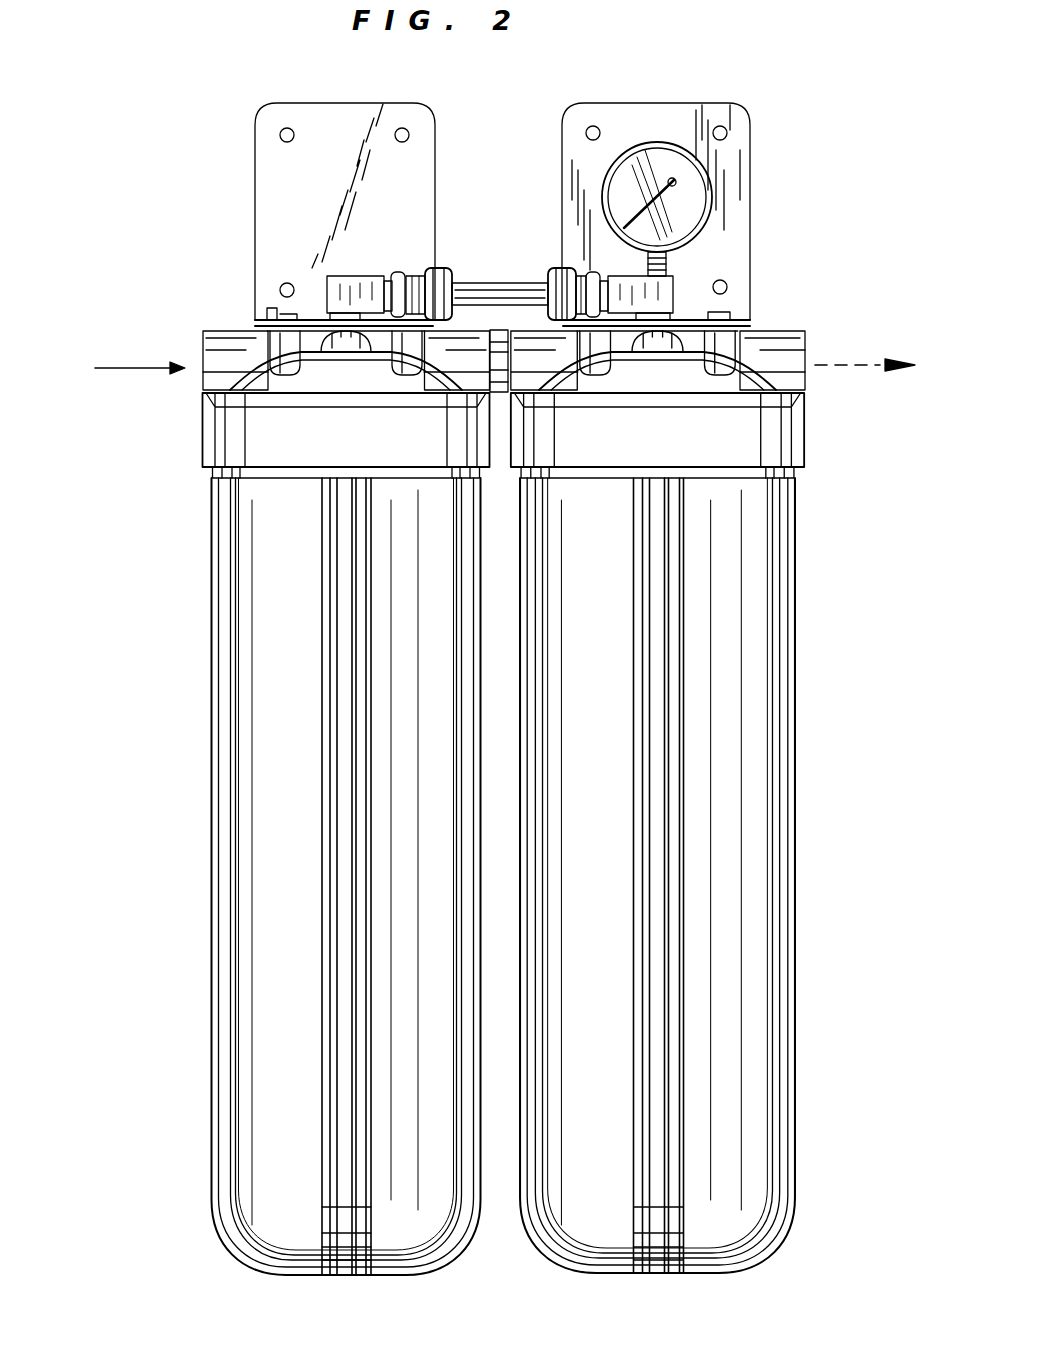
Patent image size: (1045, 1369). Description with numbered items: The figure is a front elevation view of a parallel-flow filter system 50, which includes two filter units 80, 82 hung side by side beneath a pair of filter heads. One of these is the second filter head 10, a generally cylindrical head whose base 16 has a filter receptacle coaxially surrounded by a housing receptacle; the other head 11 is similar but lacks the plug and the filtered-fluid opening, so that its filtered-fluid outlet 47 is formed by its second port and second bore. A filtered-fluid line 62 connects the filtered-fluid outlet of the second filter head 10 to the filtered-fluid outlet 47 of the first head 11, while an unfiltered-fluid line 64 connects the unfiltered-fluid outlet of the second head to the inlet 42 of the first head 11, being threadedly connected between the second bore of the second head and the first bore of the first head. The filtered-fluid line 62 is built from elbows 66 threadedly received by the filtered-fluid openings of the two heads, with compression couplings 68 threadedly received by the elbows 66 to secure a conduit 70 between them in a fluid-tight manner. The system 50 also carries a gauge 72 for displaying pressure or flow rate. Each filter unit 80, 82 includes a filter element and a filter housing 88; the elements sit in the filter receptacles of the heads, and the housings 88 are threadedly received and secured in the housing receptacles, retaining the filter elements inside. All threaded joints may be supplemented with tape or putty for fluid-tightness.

The filter system 50 is at (760, 72).
The second filter head 10 is at (219, 331).
The second filter housing head 11 is at (768, 326).
The inlet 42 is at (202, 377).
The filtered-fluid outlet 47 is at (809, 346).
The base 16 is at (213, 470).
The filtered-fluid line 62 is at (499, 283).
The unfiltered-fluid line 64 is at (503, 395).
The elbows 66 is at (327, 290).
The compression couplings 68 is at (404, 275).
The conduit 70 is at (462, 283).
The gauge 72 is at (713, 187).
The filter unit 80 is at (798, 786).
The filter unit 82 is at (227, 735).
The filter housing 88 is at (272, 843).